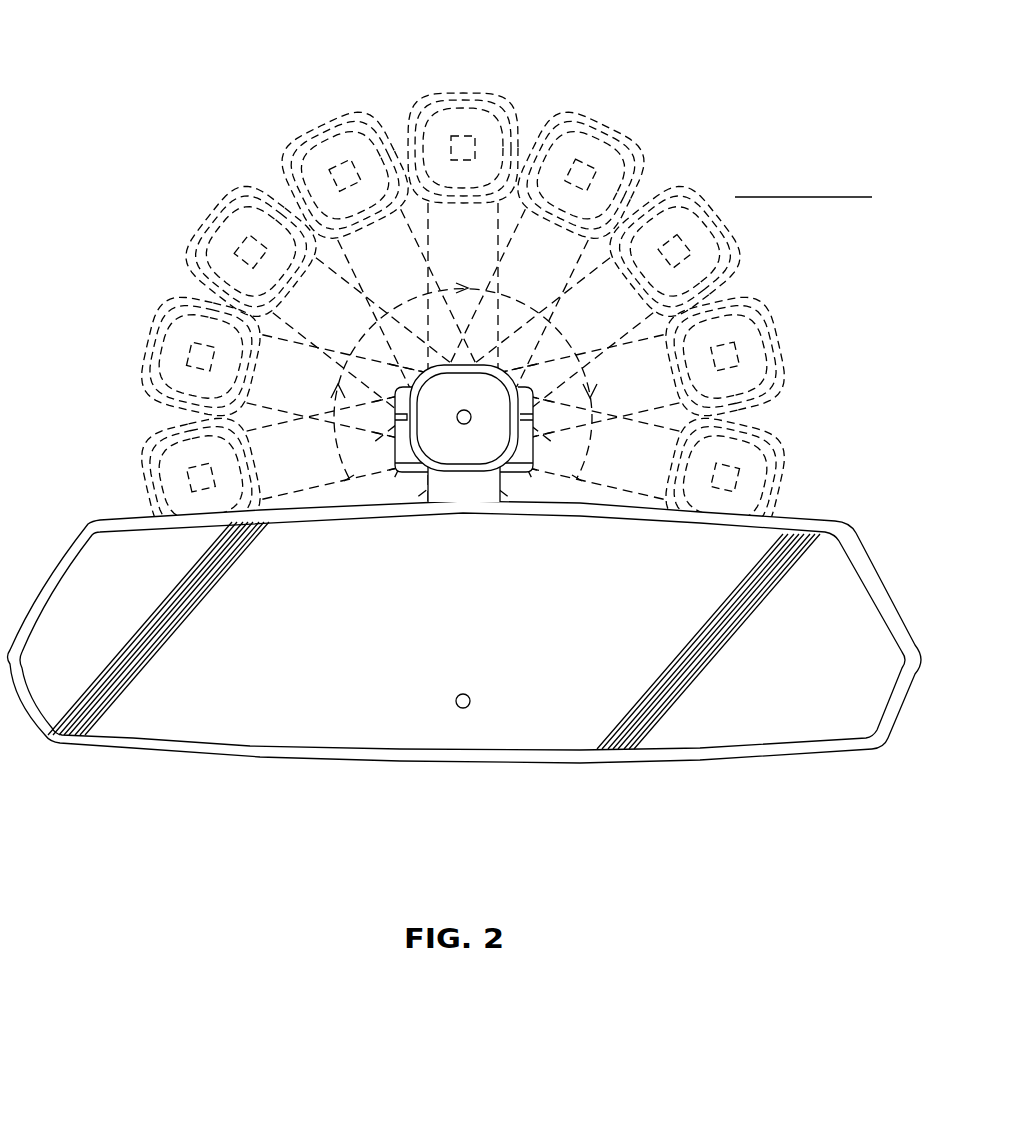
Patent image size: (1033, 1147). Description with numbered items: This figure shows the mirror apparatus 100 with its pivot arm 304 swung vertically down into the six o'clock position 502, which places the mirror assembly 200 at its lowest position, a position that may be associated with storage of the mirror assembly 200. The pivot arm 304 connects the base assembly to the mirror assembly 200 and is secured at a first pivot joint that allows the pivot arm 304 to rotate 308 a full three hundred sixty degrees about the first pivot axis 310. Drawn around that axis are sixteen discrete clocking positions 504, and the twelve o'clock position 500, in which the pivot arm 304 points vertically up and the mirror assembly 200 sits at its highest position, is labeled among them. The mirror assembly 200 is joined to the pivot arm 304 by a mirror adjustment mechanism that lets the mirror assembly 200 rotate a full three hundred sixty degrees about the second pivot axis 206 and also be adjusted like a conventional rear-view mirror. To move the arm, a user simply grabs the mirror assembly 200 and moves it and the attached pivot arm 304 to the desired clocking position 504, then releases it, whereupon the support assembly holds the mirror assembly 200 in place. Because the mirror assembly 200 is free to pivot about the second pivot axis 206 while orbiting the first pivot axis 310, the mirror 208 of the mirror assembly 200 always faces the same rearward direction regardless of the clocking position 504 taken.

The mirror apparatus 100 is at (179, 55).
The mirror assembly 200 is at (303, 632).
The mirror 208 is at (303, 679).
The second pivot axis 206 is at (471, 700).
The pivot arm 304 is at (478, 257).
The rotation of the pivot arm 308 is at (518, 300).
The first pivot axis 310 is at (461, 424).
The twelve o'clock position 500 is at (465, 93).
The six o'clock position 502 is at (817, 491).
The clocking position 504 is at (430, 97).